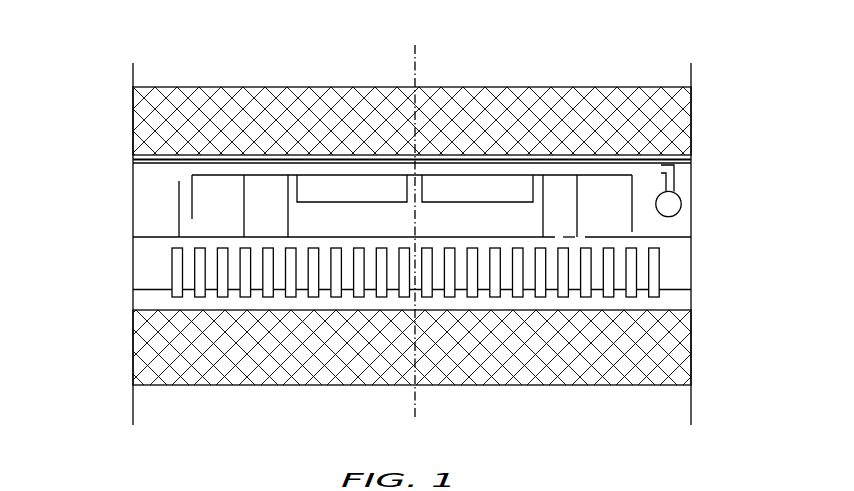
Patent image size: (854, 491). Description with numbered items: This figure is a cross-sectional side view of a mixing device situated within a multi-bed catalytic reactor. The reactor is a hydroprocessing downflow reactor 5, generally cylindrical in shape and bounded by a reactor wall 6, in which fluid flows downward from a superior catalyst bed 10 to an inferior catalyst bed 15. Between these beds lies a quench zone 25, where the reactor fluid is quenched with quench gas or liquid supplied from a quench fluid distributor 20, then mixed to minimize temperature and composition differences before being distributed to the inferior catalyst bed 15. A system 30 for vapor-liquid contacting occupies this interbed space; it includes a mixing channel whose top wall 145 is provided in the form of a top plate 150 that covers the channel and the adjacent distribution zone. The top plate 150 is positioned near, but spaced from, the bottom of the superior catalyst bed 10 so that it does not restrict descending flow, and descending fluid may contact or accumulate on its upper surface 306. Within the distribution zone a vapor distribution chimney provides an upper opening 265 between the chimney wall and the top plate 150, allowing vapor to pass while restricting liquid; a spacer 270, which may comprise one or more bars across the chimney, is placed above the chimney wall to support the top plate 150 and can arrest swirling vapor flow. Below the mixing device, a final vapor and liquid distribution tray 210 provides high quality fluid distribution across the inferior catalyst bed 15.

The hydroprocessing downflow reactor 5 is at (133, 174).
The reactor wall 6 is at (133, 201).
The superior catalyst bed 10 is at (515, 97).
The inferior catalyst bed 15 is at (678, 342).
The quench fluid distributor 20 is at (672, 176).
The quench zone 25 is at (705, 218).
The system 30 is at (110, 225).
The top wall 145 is at (588, 176).
The top plate 150 is at (203, 176).
The final vapor and liquid distribution tray 210 is at (142, 276).
The upper opening 265 is at (332, 195).
The spacer 270 is at (411, 182).
The upper surface 306 is at (441, 176).